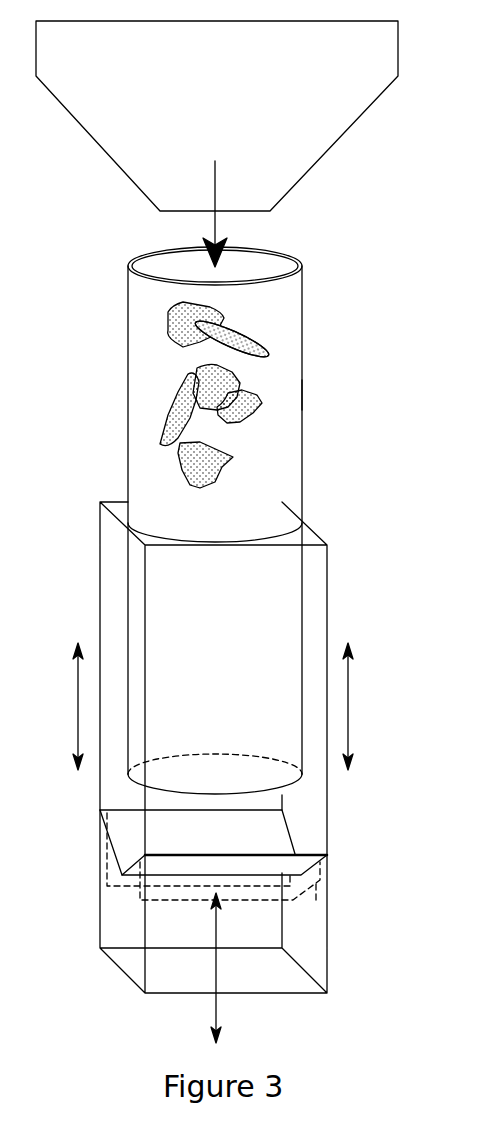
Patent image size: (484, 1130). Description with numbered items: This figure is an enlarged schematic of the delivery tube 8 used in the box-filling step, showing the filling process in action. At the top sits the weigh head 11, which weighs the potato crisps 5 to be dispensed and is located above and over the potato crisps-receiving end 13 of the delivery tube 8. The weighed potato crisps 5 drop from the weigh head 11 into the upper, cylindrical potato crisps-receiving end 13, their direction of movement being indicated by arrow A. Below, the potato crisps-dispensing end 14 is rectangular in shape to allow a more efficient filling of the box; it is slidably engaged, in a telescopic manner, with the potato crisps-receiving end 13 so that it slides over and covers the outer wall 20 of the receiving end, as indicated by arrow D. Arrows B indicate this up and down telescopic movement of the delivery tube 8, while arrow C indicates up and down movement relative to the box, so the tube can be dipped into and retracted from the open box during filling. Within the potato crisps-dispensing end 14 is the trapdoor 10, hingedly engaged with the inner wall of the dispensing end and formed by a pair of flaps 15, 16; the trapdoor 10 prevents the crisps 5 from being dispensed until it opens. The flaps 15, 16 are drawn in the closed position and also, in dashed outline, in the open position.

The weigh head 11 is at (310, 127).
The potato crisps-receiving end 13 is at (303, 287).
The potato crisps 5 is at (250, 347).
The outer wall 20 is at (303, 395).
The delivery tube 8 is at (303, 450).
The potato crisps-dispensing end 14 is at (327, 940).
The trapdoor 10 is at (267, 835).
The flap 15 is at (125, 833).
The flap 16 is at (165, 865).
The arrow A is at (217, 226).
The arrows B is at (349, 696).
The arrow C is at (215, 1012).
The arrow D is at (317, 887).